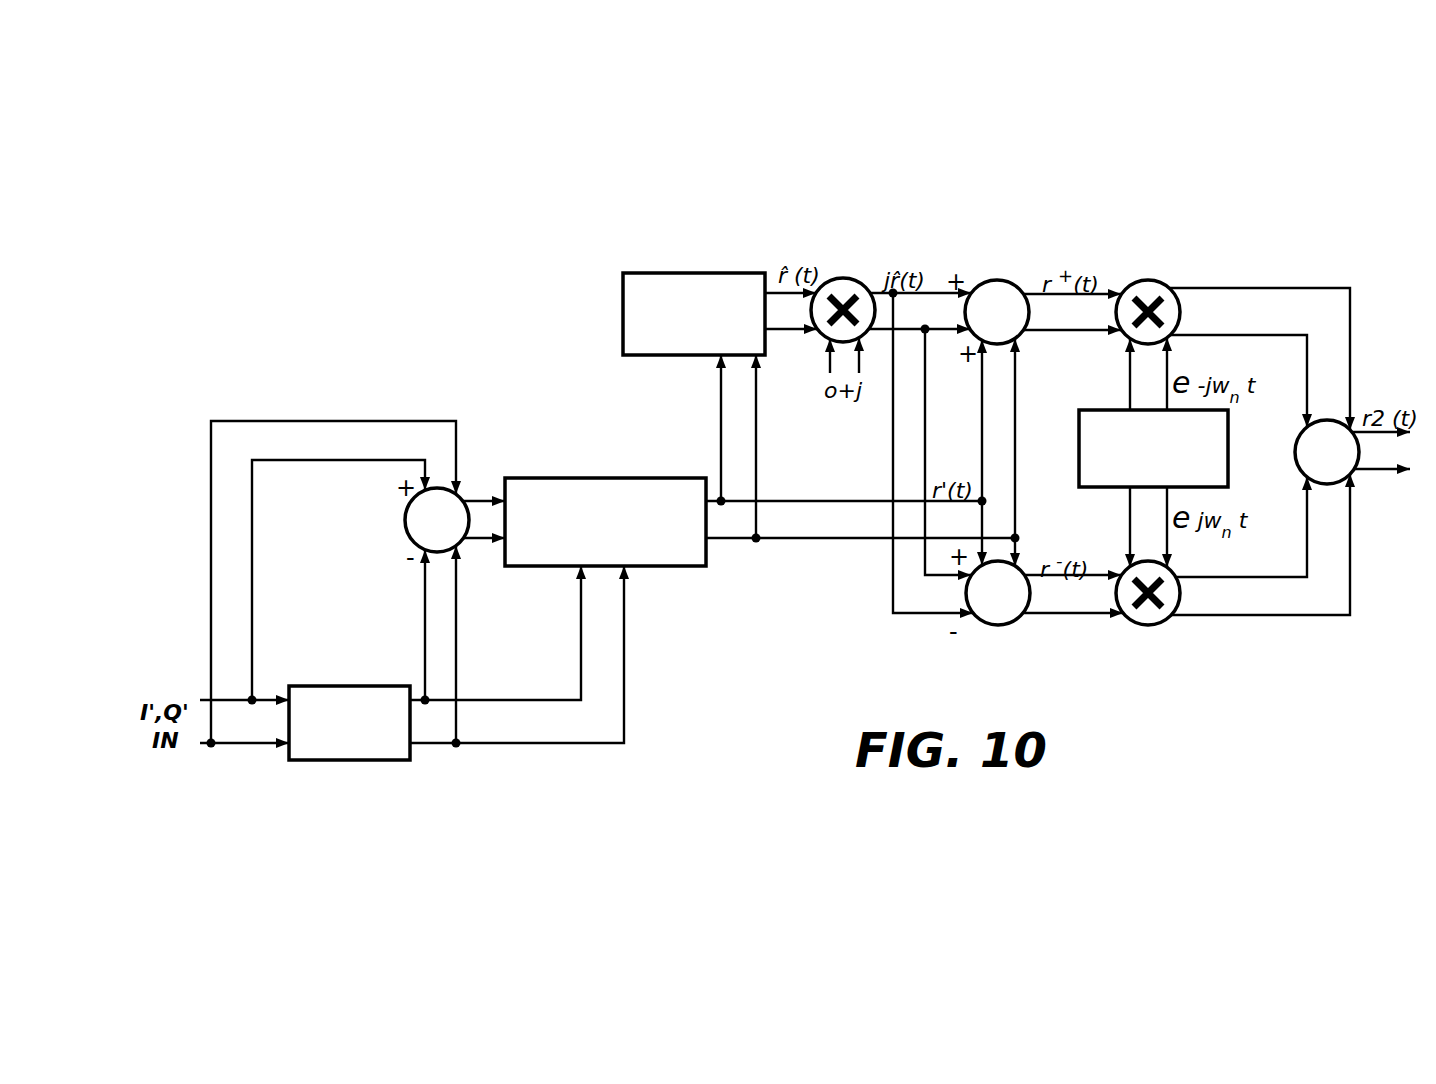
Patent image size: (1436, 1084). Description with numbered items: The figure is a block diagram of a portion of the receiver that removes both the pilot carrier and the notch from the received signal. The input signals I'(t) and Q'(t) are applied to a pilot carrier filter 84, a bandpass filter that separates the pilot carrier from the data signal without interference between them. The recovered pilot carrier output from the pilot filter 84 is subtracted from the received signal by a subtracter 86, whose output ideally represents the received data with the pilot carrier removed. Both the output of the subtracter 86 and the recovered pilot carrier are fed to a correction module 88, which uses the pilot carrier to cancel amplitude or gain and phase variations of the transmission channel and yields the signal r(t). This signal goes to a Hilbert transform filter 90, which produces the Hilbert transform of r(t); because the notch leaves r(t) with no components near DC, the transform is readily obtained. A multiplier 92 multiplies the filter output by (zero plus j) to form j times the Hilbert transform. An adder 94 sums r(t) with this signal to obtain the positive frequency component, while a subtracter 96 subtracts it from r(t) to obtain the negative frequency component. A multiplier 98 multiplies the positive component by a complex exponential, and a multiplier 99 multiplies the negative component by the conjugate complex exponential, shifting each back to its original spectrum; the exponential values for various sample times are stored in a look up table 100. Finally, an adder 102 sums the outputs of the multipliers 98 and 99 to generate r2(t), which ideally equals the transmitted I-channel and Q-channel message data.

The pilot carrier filter 84 is at (333, 686).
The subtracter 86 is at (405, 521).
The correction module 88 is at (615, 478).
The Hilbert transform filter 90 is at (633, 272).
The multiplier 92 is at (843, 278).
The adder 94 is at (996, 281).
The subtracter 96 is at (1022, 623).
The multiplier 98 is at (1148, 281).
The multiplier 99 is at (1168, 622).
The look up table 100 is at (1079, 420).
The adder 102 is at (1295, 451).